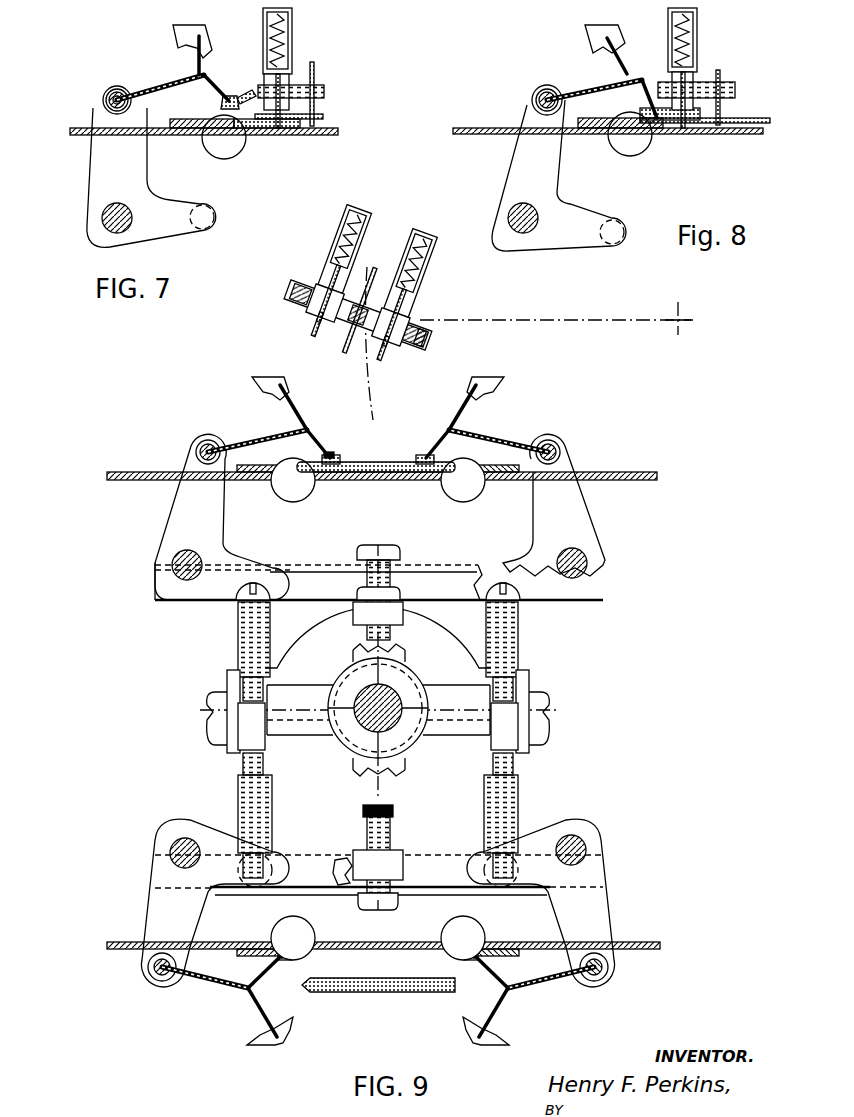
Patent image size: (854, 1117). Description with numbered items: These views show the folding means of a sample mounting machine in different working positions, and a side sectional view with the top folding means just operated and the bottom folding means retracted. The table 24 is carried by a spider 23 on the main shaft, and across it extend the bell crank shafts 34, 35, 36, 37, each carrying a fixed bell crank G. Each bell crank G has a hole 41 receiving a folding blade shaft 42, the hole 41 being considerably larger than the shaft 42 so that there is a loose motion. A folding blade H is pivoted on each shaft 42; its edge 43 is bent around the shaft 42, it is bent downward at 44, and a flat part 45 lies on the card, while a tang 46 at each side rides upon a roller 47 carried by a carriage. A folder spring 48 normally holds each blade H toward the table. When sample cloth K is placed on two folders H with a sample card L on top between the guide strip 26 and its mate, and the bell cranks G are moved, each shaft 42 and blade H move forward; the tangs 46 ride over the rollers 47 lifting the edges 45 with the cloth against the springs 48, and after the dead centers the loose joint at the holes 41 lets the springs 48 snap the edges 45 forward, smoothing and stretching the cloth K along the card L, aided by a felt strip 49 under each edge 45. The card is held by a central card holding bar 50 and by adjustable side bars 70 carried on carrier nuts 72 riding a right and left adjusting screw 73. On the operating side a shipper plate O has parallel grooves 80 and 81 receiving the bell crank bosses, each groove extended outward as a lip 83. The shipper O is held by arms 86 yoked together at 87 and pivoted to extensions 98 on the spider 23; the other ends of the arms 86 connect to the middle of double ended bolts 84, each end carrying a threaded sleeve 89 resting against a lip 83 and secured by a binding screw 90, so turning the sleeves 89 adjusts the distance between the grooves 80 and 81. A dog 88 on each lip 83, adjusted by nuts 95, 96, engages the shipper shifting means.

In FIG. 7, the table 24 is at (72, 132).
In FIG. 7, the guide strip 26 is at (178, 137).
In FIG. 7, the hole 41 is at (117, 86).
In FIG. 8, the hole 41 is at (537, 93).
In FIG. 7, the folding blade shaft 42 is at (108, 104).
In FIG. 8, the folding blade shaft 42 is at (538, 101).
In FIG. 7, the edge 43 is at (104, 97).
In FIG. 7, the bent portion 44 is at (213, 86).
In FIG. 7, the flat part 45 is at (241, 95).
In FIG. 9, the flat part 45 is at (338, 454).
In FIG. 7, the tang 46 is at (228, 95).
In FIG. 9, the tang 46 is at (330, 453).
In FIG. 7, the roller 47 is at (228, 149).
In FIG. 8, the roller 47 is at (636, 147).
In FIG. 7, the folder spring 48 is at (195, 58).
In FIG. 8, the folder spring 48 is at (620, 62).
In FIG. 7, the felt strip 49 is at (225, 112).
In FIG. 8, the felt strip 49 is at (652, 109).
In FIG. 9, the central card holding bar 50 is at (362, 304).
In FIG. 9, the adjustable side bar 70 is at (341, 353).
In FIG. 9, the carrier nut 72 is at (370, 283).
In FIG. 9, the right and left adjusting screw 73 is at (442, 347).
In FIG. 9, the groove 80 is at (318, 582).
In FIG. 9, the groove 81 is at (380, 878).
In FIG. 9, the lip 83 is at (600, 602).
In FIG. 9, the double ended bolt 84 is at (243, 763).
In FIG. 9, the arm 86 is at (227, 680).
In FIG. 9, the yoke 87 is at (378, 671).
In FIG. 9, the dog 88 is at (398, 546).
In FIG. 9, the threaded sleeve 89 is at (238, 635).
In FIG. 9, the binding screw 90 is at (522, 587).
In FIG. 9, the nut 95 is at (363, 835).
In FIG. 9, the nut 96 is at (360, 866).
In FIG. 9, the extension 98 is at (396, 708).
In FIG. 9, the spider 23 is at (352, 655).
In FIG. 9, the bell crank shaft 34 is at (178, 572).
In FIG. 9, the bell crank shaft 35 is at (585, 553).
In FIG. 9, the bell crank shaft 36 is at (175, 848).
In FIG. 9, the bell crank shaft 37 is at (588, 844).
In FIG. 7, the bell crank G is at (93, 165).
In FIG. 8, the bell crank G is at (559, 175).
In FIG. 9, the bell crank G is at (175, 510).
In FIG. 7, the folding blade H is at (163, 92).
In FIG. 8, the folding blade H is at (588, 98).
In FIG. 9, the folding blade H is at (255, 443).
In FIG. 7, the sample cloth K is at (277, 130).
In FIG. 7, the sample card L is at (325, 117).
In FIG. 8, the sample card L is at (755, 118).
In FIG. 9, the shipper plate O is at (272, 818).